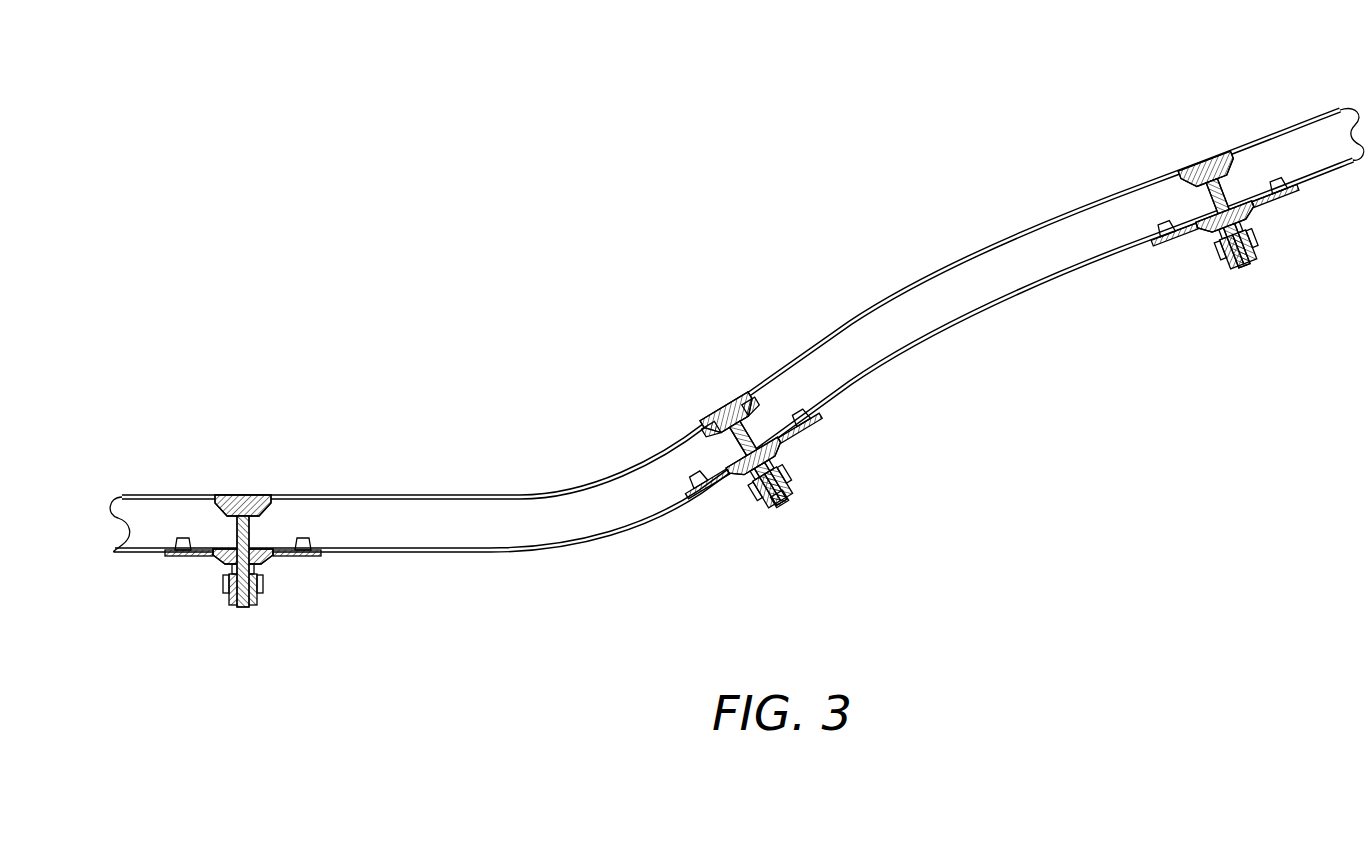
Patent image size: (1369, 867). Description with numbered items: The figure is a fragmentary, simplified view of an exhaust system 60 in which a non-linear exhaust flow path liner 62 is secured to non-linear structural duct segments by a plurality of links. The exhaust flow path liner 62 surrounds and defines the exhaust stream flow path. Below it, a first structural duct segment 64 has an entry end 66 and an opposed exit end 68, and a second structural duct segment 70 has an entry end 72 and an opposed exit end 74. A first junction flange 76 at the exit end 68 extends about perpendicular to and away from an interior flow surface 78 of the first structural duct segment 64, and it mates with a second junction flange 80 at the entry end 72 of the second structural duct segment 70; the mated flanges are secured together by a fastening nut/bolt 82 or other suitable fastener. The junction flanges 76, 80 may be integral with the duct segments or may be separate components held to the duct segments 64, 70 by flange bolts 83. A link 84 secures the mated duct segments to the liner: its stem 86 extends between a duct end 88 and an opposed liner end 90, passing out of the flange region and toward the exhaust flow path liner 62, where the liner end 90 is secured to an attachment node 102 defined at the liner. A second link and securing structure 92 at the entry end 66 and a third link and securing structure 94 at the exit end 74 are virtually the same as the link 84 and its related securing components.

The exhaust system 60 is at (740, 251).
The exhaust flow path liner 62 is at (920, 279).
The first structural duct segment 64 is at (435, 560).
The entry end 66 is at (266, 567).
The exit end 68 is at (740, 480).
The second structural duct segment 70 is at (905, 356).
The entry end 72 is at (774, 456).
The exit end 74 is at (1204, 242).
The first junction flange 76 is at (768, 509).
The interior flow surface 78 is at (597, 529).
The second junction flange 80 is at (784, 491).
The fastening nut/bolt 82 is at (791, 479).
The flange bolts 83 is at (678, 473).
The link 84 is at (745, 432).
The stem 86 is at (718, 449).
The duct end 88 is at (758, 492).
The liner end 90 is at (714, 411).
The second link and securing structure 92 is at (255, 530).
The third link and securing structure 94 is at (1225, 188).
The attachment node 102 is at (710, 431).